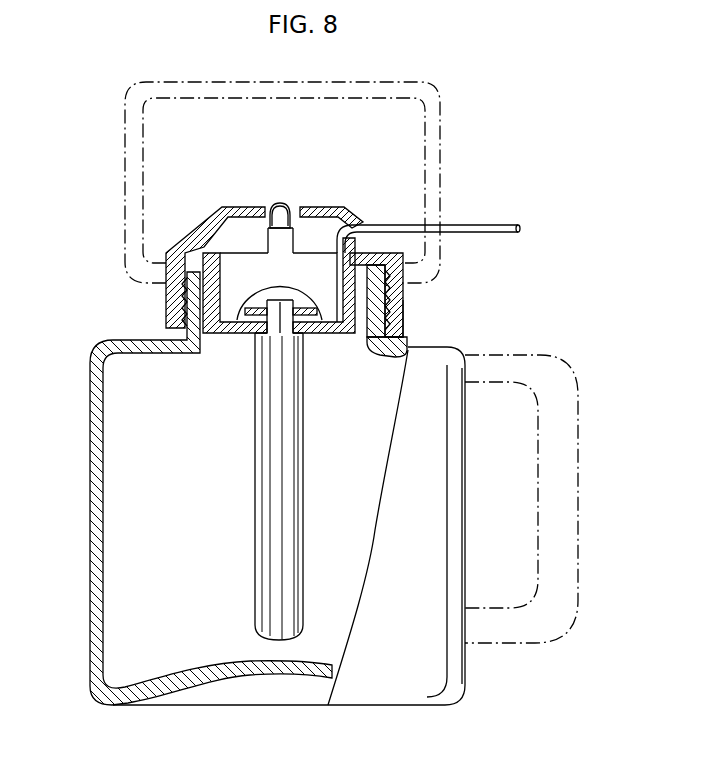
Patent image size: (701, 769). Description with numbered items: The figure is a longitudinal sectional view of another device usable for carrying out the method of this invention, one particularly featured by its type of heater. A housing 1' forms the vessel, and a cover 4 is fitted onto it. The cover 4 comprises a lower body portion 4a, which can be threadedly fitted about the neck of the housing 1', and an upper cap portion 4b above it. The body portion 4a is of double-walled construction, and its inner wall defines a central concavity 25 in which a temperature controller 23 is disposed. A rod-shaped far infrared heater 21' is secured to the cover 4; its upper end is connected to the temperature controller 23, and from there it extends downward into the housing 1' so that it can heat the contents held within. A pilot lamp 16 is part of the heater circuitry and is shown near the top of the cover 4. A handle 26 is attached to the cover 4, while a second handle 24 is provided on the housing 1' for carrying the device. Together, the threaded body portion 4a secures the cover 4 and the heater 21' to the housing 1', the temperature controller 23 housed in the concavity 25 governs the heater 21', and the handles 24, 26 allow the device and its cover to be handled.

The housing 1' is at (247, 485).
The cover 4 is at (323, 251).
The lower body portion 4a is at (405, 330).
The upper cap portion 4b is at (368, 215).
The pilot lamp 16 is at (280, 201).
The rod-shaped far infrared heater 21' is at (304, 470).
The temperature controller 23 is at (312, 262).
The handle 24 is at (575, 530).
The central concavity 25 is at (336, 334).
The handle 26 is at (375, 83).